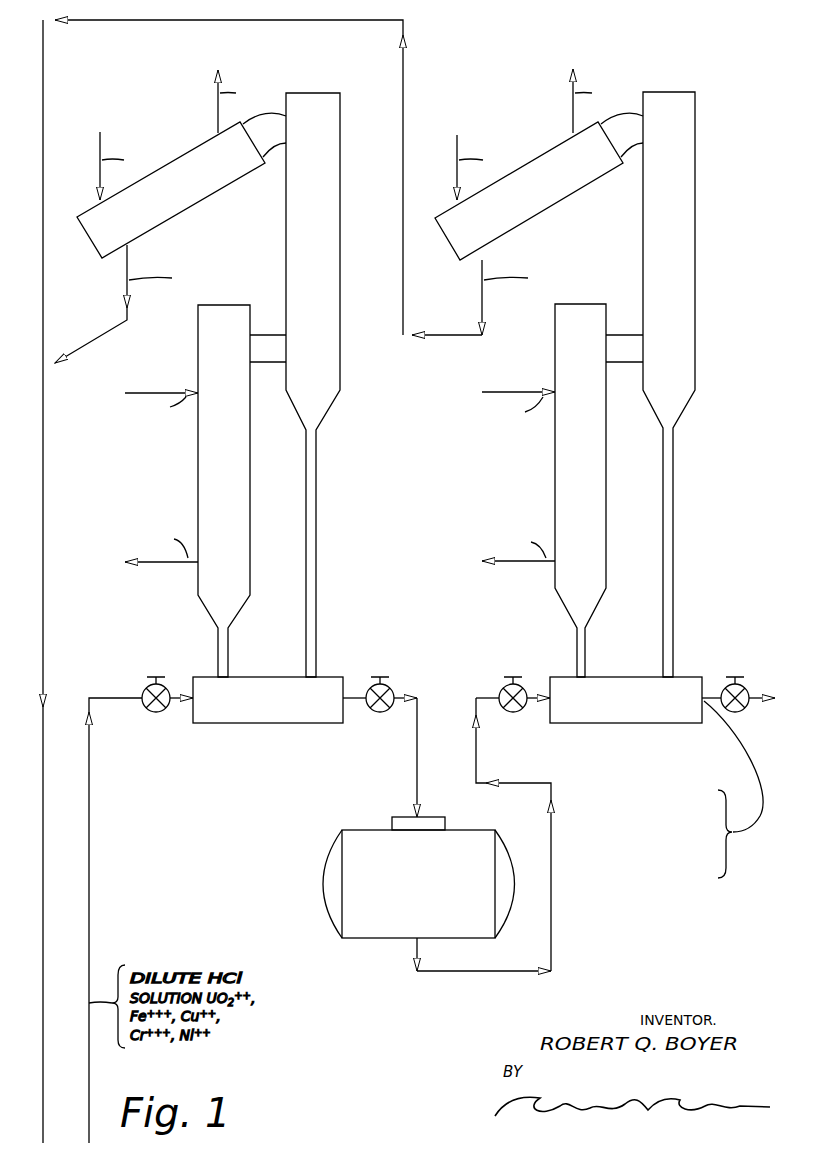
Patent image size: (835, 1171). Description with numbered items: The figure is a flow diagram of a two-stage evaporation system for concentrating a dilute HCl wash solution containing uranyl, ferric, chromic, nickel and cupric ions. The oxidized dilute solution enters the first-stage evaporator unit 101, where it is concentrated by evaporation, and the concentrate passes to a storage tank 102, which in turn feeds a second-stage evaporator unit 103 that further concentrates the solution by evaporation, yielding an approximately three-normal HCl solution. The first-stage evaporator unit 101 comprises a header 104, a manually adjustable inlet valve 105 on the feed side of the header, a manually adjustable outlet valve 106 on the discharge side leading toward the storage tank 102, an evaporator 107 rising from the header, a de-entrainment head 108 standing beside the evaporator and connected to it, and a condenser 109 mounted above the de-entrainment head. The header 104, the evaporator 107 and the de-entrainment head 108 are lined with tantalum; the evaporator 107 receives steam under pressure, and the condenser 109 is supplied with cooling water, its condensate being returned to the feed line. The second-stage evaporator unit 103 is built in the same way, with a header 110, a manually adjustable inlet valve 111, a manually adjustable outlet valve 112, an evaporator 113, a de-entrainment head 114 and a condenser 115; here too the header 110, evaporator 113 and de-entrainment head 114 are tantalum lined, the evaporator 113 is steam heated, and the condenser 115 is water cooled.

The first-stage evaporator unit 101 is at (273, 796).
The storage tank 102 is at (323, 882).
The second-stage evaporator unit 103 is at (633, 796).
The header 104 is at (288, 652).
The manually adjustable inlet valve 105 is at (146, 688).
The manually adjustable outlet valve 106 is at (403, 650).
The evaporator 107 is at (198, 470).
The de-entrainment head 108 is at (340, 385).
The condenser 109 is at (180, 215).
The header 110 is at (645, 652).
The manually adjustable inlet valve 111 is at (534, 670).
The manually adjustable outlet valve 112 is at (747, 683).
The evaporator 113 is at (555, 472).
The de-entrainment head 114 is at (695, 386).
The condenser 115 is at (540, 213).